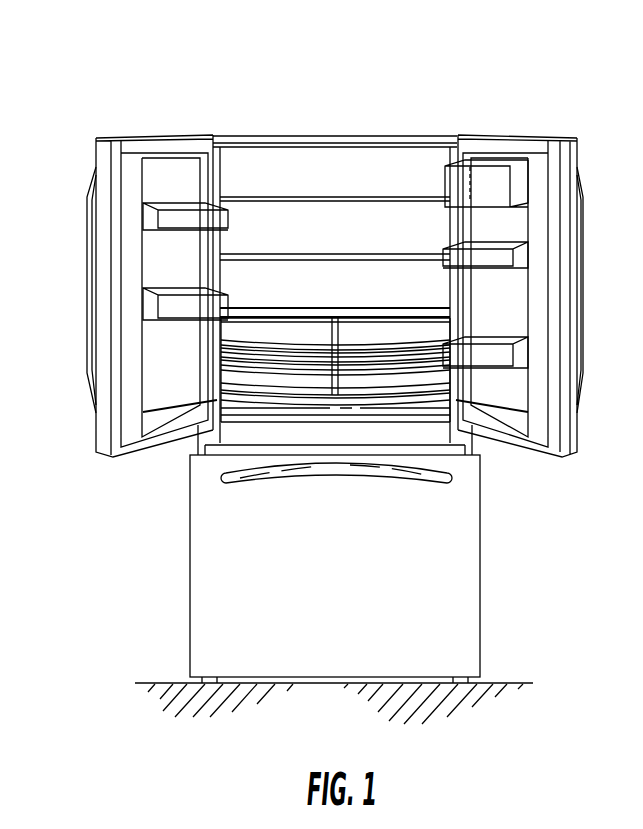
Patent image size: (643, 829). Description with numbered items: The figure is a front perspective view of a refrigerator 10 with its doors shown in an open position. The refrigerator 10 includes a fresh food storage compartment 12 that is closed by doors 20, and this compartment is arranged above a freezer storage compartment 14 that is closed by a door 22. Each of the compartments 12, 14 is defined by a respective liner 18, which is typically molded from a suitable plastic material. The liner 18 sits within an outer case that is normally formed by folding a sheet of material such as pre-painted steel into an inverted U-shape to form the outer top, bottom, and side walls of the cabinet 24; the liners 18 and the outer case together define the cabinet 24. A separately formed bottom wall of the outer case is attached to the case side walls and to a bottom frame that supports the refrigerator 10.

The refrigerator 10 is at (446, 72).
The fresh food storage compartment 12 is at (310, 178).
The freezer storage compartment 14 is at (434, 546).
The liner 18 is at (348, 294).
The doors 20 is at (147, 137).
The door 22 is at (190, 587).
The cabinet 24 is at (262, 136).